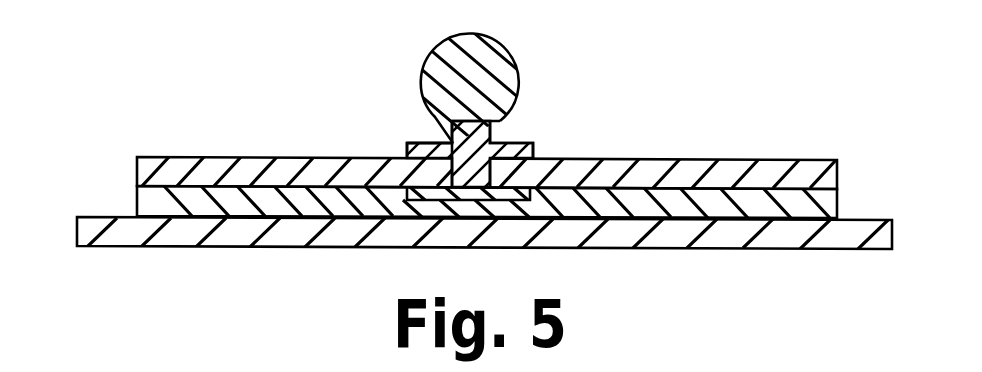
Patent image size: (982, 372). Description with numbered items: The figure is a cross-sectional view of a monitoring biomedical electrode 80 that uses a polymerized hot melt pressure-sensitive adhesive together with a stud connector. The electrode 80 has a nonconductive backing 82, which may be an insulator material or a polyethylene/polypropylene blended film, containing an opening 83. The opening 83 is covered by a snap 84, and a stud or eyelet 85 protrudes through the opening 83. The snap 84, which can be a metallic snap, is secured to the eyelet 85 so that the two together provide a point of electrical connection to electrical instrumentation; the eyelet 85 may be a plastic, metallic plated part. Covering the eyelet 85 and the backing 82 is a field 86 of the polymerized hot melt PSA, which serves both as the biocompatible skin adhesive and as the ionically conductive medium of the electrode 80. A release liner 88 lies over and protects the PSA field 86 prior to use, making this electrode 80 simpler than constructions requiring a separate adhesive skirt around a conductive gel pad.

The electrode 80 is at (453, 124).
The nonconductive backing 82 is at (690, 158).
The opening 83 is at (443, 142).
The snap 84 is at (492, 92).
The eyelet 85 is at (500, 121).
The field of polymerized hot melt PSA 86 is at (138, 203).
The release liner 88 is at (78, 227).